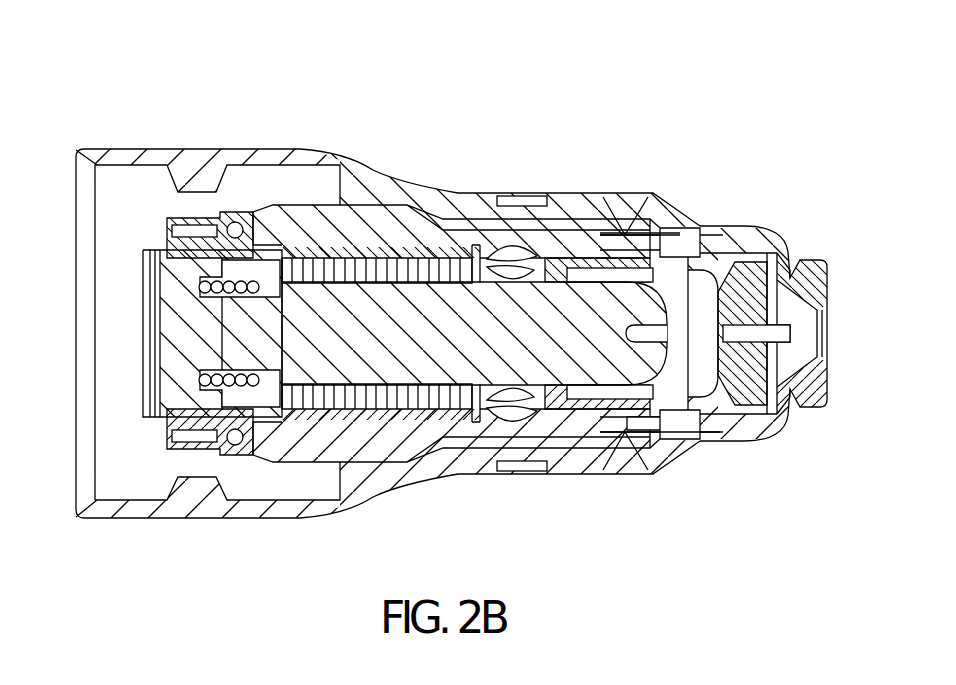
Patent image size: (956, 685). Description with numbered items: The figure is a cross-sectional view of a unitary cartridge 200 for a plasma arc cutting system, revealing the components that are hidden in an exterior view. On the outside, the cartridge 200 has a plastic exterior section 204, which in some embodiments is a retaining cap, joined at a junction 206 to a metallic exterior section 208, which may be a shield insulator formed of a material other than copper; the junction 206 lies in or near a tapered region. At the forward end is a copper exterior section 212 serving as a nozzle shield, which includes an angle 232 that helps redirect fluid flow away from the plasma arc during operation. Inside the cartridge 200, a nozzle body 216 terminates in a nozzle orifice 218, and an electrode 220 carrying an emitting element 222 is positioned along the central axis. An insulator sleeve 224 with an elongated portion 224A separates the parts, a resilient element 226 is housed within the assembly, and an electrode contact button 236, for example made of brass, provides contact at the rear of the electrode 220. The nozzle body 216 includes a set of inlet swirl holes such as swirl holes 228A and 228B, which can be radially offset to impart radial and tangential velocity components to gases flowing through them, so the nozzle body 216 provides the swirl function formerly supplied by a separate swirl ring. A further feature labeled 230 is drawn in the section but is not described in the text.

The unitary cartridge 200 is at (793, 97).
The plastic exterior section 204 is at (105, 162).
The junction 206 is at (404, 160).
The metallic exterior section 208 is at (523, 192).
The copper exterior section 212 is at (744, 227).
The nozzle body 216 is at (570, 437).
The nozzle orifice 218 is at (727, 395).
The electrode 220 is at (603, 292).
The emitting element 222 is at (644, 326).
The insulator sleeve 224 is at (248, 448).
The elongated portion 224A is at (413, 412).
The resilient element 226 is at (205, 432).
The swirl hole 228A is at (527, 427).
The swirl hole 228B is at (500, 243).
The retaining wall 230 is at (643, 443).
The angle 232 is at (800, 245).
The electrode contact button 236 is at (175, 355).